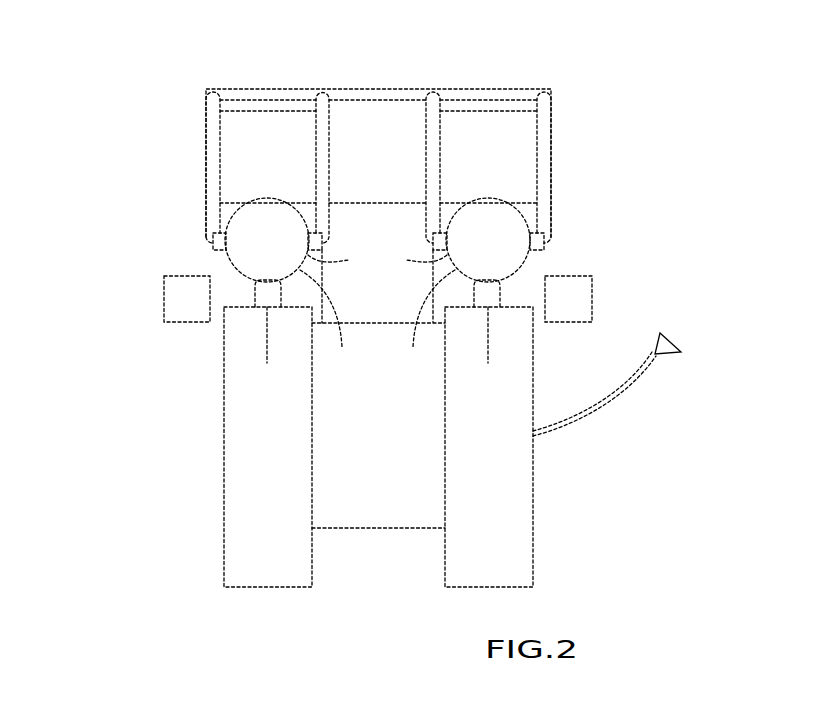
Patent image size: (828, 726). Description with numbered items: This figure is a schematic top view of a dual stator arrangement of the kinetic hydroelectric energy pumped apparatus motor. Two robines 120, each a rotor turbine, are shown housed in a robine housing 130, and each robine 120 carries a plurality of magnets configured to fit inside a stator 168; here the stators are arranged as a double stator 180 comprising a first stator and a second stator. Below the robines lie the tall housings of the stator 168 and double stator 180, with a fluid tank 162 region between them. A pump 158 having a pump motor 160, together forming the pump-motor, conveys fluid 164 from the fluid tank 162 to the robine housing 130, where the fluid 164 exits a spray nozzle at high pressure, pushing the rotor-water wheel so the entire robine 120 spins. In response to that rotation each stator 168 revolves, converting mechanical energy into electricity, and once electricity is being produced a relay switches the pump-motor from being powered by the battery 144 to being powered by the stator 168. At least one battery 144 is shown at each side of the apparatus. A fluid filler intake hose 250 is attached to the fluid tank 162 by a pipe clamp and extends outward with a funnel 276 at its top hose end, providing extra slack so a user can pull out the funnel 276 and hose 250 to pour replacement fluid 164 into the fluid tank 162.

The robine 120 is at (378, 171).
The robine housing 130 is at (222, 186).
The battery 144 is at (172, 299).
The pump 158 is at (378, 134).
The pump motor 160 is at (366, 212).
The fluid tank 162 is at (411, 520).
The fluid 164 is at (400, 447).
The stator 168 is at (375, 447).
The double stator 180 is at (189, 482).
The fluid filler intake hose 250 is at (615, 406).
The funnel 276 is at (672, 342).